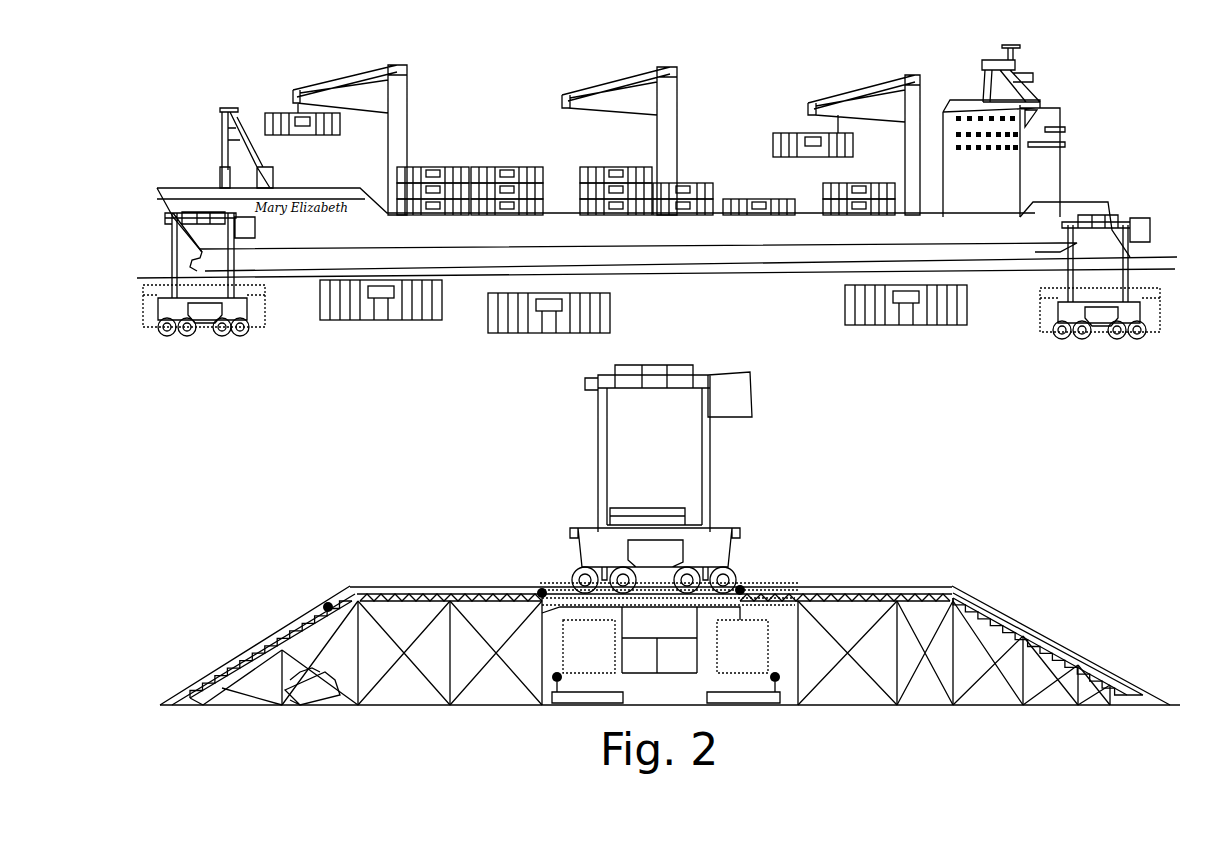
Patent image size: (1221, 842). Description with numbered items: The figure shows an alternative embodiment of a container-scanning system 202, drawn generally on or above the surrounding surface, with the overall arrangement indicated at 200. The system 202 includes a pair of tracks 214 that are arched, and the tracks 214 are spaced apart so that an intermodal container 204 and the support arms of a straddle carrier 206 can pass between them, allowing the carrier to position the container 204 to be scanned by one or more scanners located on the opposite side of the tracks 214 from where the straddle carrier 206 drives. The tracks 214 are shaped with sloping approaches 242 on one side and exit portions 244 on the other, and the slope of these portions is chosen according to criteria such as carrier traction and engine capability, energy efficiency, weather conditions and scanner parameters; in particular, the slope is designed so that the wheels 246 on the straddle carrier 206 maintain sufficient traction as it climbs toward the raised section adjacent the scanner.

The container handling system 200 is at (236, 436).
The system 202 is at (827, 456).
The intermodal container 204 is at (759, 601).
The straddle carrier 206 is at (760, 379).
The tracks 214 is at (925, 585).
The sloping approaches 242 is at (253, 632).
The exit portions 244 is at (1067, 621).
The wheels 246 is at (574, 570).